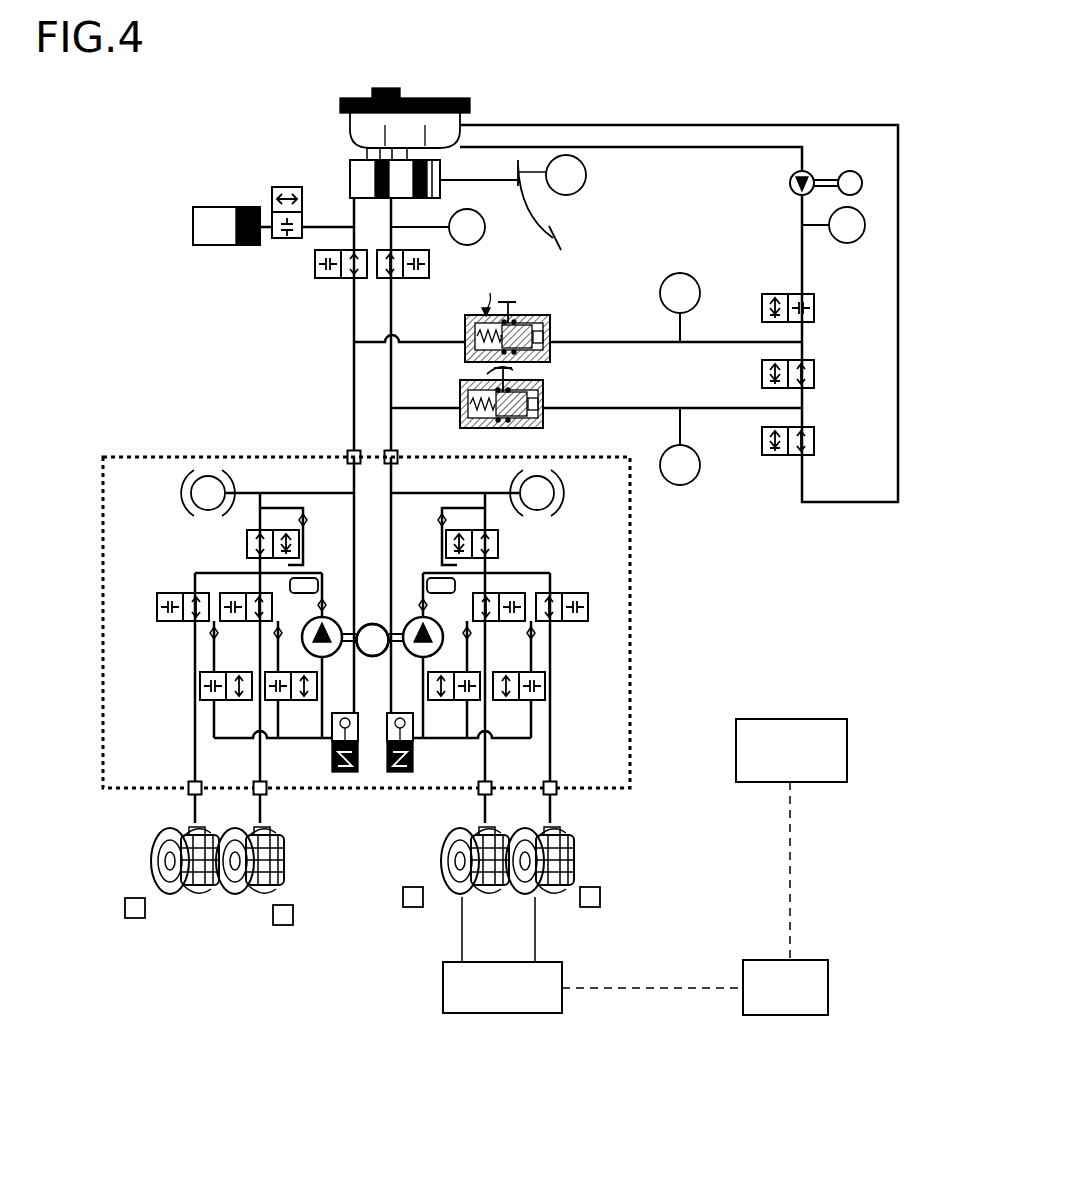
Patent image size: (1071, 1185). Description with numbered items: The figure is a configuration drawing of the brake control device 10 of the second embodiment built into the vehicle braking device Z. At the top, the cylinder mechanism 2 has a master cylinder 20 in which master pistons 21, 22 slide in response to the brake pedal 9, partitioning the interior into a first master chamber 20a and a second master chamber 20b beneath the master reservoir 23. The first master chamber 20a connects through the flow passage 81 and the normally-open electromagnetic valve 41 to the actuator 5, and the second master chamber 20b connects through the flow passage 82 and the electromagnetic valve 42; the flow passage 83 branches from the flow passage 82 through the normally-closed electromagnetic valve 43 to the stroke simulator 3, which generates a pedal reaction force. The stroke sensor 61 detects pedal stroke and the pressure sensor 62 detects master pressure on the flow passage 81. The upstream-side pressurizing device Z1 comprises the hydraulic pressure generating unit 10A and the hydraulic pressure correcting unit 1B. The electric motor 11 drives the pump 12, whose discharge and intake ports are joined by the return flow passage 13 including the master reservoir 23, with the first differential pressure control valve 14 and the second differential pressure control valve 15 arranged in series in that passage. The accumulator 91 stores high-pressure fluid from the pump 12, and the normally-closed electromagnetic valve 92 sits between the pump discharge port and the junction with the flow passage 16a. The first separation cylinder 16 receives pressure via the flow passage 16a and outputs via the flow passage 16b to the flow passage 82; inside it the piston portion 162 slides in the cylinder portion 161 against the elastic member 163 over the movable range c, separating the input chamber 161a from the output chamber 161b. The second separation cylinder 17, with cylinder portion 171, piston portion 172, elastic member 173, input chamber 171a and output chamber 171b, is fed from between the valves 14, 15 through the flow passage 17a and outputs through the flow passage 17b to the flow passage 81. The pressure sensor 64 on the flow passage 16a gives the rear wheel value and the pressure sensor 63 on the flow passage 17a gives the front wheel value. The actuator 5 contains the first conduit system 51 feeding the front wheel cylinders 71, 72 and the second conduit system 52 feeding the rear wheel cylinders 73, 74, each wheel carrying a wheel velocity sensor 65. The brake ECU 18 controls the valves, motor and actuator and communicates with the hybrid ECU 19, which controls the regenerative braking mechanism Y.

The hydraulic pressure correcting unit 1B is at (818, 528).
The cylinder mechanism 2 is at (286, 120).
The stroke simulator 3 is at (200, 245).
The actuator 5 is at (243, 452).
The brake pedal 9 is at (563, 240).
The electric brake actuator (slave cylinder device) 10 is at (679, 103).
The hydraulic pressure generating unit 10A is at (739, 199).
The electric motor 11 is at (863, 182).
The pump 12 is at (791, 189).
The return flow passage 13 is at (806, 165).
The first differential pressure control valve 14 is at (816, 380).
The second differential pressure control valve 15 is at (816, 445).
The first separation cylinder 16 is at (531, 320).
The flow passage 16a is at (713, 340).
The flow passage 16b is at (372, 341).
The second separation cylinder 17 is at (526, 406).
The flow passage 17a is at (657, 408).
The flow passage 17b is at (396, 407).
The brake ECU 18 is at (760, 718).
The hybrid ECU 19 is at (830, 985).
The master cylinder 20 is at (385, 169).
The first master chamber 20a is at (396, 185).
The second master chamber 20b is at (330, 327).
The master piston 21 is at (442, 170).
The master piston 22 is at (383, 178).
The master reservoir 23 is at (354, 130).
The electromagnetic valve 41 is at (430, 264).
The electromagnetic valve 42 is at (315, 270).
The electromagnetic valve 43 is at (272, 193).
The first conduit system 51 is at (557, 553).
The second conduit system 52 is at (180, 532).
The stroke sensor 61 is at (587, 182).
The pressure sensor 62 is at (483, 238).
The pressure sensor 63 is at (703, 466).
The pressure sensor 64 is at (682, 273).
The wheel velocity sensor 65 is at (134, 916).
The wheel cylinder 71 is at (567, 834).
The wheel cylinder 72 is at (445, 826).
The wheel cylinder 73 is at (266, 878).
The wheel cylinder 74 is at (207, 885).
The flow passage 81 is at (389, 445).
The flow passage 82 is at (348, 440).
The flow passage 83 is at (313, 232).
The accumulator 91 is at (841, 247).
The electromagnetic valve 92 is at (790, 290).
The cylinder portion 161 is at (521, 312).
The input chamber 161a is at (553, 333).
The output chamber 161b is at (478, 350).
The piston portion 162 is at (537, 314).
The elastic member 163 is at (465, 336).
The cylinder portion 171 is at (537, 383).
The input chamber 171a is at (548, 403).
The output chamber 171b is at (487, 428).
The piston portion 172 is at (528, 427).
The elastic member 173 is at (476, 424).
The movable range c is at (471, 313).
The regenerative braking mechanism Y is at (443, 995).
The vehicle braking device Z is at (148, 126).
The upstream-side pressurizing device Z1 is at (200, 347).